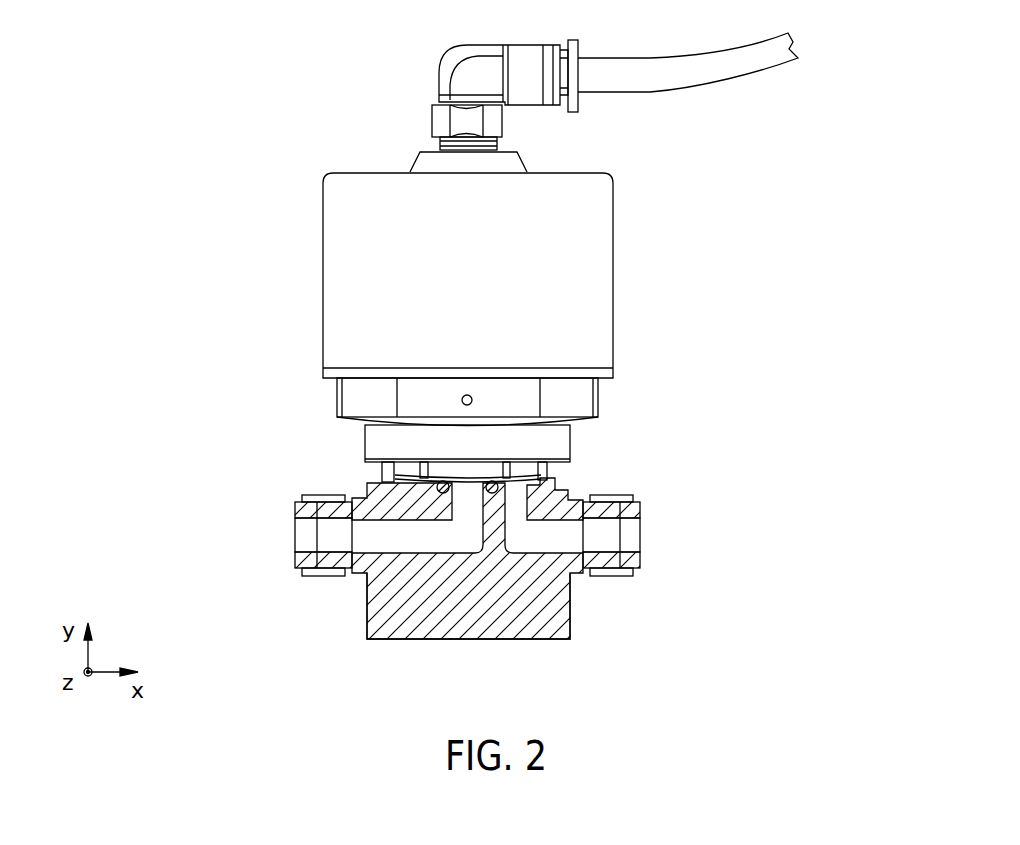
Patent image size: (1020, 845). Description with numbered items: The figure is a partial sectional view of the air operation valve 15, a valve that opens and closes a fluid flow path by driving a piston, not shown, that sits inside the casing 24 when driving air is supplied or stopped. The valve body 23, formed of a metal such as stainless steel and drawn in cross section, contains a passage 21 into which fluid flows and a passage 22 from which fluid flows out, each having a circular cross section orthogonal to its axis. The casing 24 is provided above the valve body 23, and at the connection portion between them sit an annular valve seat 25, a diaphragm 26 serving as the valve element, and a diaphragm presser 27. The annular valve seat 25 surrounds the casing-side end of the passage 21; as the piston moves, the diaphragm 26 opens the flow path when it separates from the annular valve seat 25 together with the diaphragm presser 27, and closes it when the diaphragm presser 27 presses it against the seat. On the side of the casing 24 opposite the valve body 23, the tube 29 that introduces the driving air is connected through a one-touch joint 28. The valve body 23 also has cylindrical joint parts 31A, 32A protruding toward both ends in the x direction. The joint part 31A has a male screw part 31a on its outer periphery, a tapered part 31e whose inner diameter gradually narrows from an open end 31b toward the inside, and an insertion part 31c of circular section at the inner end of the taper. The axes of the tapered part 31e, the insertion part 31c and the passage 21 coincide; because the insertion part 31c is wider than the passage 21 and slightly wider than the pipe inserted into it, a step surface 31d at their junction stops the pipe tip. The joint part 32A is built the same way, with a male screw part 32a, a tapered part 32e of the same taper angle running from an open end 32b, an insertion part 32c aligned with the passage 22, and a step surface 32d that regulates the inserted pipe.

The air operation valve 15 is at (296, 283).
The passage 21 is at (471, 577).
The passage 22 is at (570, 498).
The valve body 23 is at (485, 622).
The casing 24 is at (598, 288).
The annular valve seat 25 is at (368, 482).
The diaphragm 26 is at (553, 470).
The diaphragm presser 27 is at (490, 466).
The one-touch joint 28 is at (453, 85).
The tube 29 is at (697, 78).
The joint part 31A is at (282, 532).
The male screw part 31a is at (313, 577).
The open end 31b is at (308, 548).
The insertion part 31c is at (318, 550).
The step surface 31d is at (343, 518).
The tapered part 31e is at (297, 508).
The joint part 32A is at (666, 536).
The male screw part 32a is at (620, 574).
The open end 32b is at (643, 560).
The insertion part 32c is at (610, 540).
The step surface 32d is at (588, 558).
The tapered part 32e is at (640, 509).